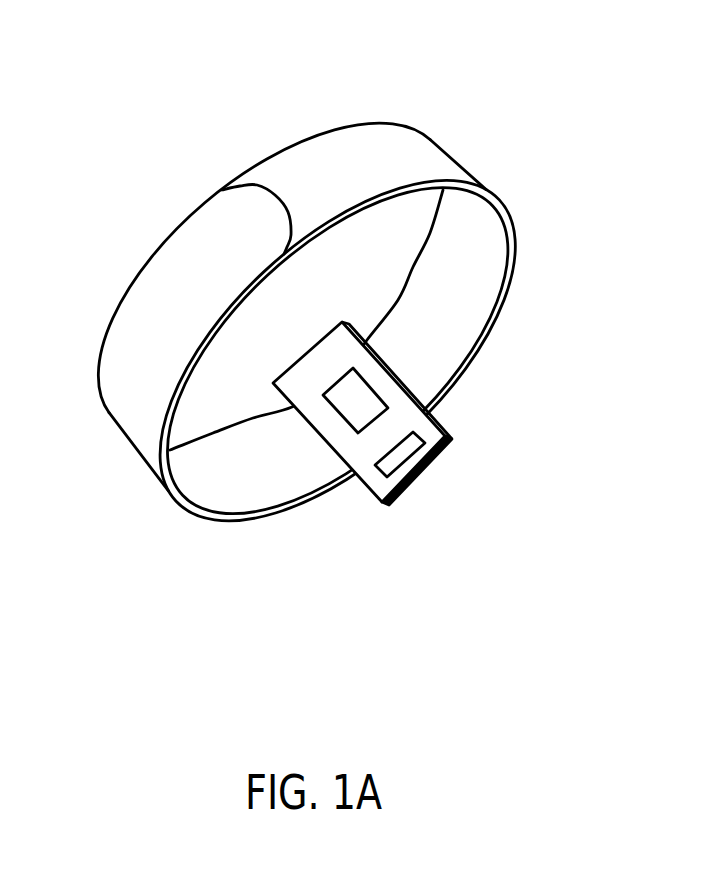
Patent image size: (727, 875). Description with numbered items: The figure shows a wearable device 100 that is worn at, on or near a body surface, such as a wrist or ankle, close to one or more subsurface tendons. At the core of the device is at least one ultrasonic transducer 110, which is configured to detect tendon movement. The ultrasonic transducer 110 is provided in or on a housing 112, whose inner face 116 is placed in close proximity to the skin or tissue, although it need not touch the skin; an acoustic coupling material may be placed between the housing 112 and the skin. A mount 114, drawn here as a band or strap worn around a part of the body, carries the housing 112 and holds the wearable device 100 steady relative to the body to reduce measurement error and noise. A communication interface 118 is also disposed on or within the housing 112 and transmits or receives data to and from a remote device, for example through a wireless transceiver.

The wearable device 100 is at (592, 112).
The ultrasonic transducer 110 is at (384, 398).
The housing 112 is at (450, 428).
The mount 114 is at (132, 360).
The inner face 116 is at (350, 448).
The communication interface 118 is at (403, 467).